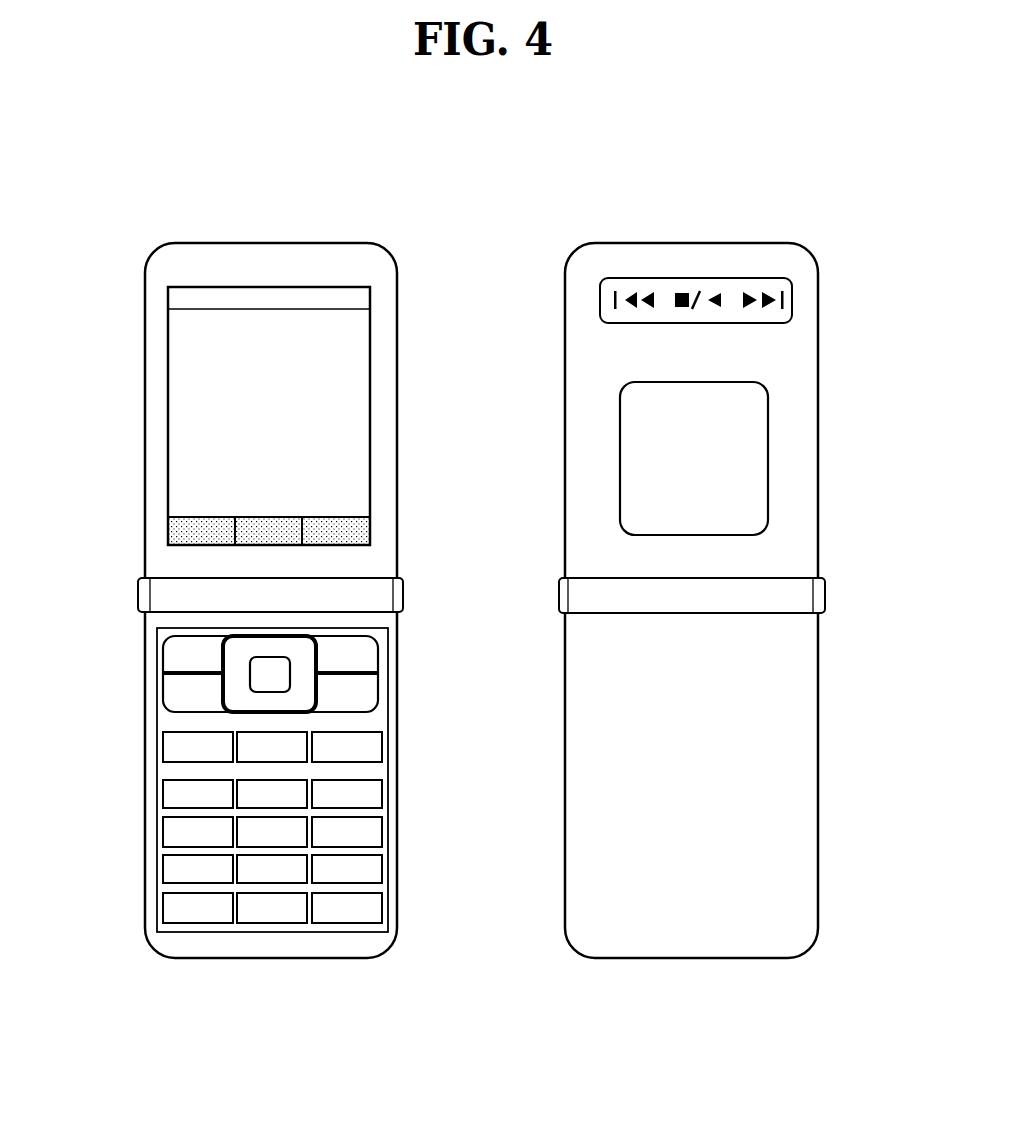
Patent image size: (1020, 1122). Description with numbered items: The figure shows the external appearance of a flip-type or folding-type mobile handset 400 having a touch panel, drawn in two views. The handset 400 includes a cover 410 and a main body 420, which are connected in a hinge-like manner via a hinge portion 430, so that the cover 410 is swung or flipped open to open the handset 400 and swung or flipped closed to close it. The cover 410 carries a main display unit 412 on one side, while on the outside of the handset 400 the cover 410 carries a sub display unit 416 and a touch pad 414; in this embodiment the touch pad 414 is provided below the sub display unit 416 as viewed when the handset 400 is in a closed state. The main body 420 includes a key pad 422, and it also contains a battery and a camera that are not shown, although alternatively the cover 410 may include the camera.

The mobile handset 400 is at (112, 208).
The cover 410 is at (390, 288).
The main display unit 412 is at (355, 435).
The touch pad 414 is at (792, 308).
The sub display unit 416 is at (762, 423).
The main body 420 is at (568, 868).
The key pad 422 is at (372, 720).
The hinge portion 430 is at (378, 592).